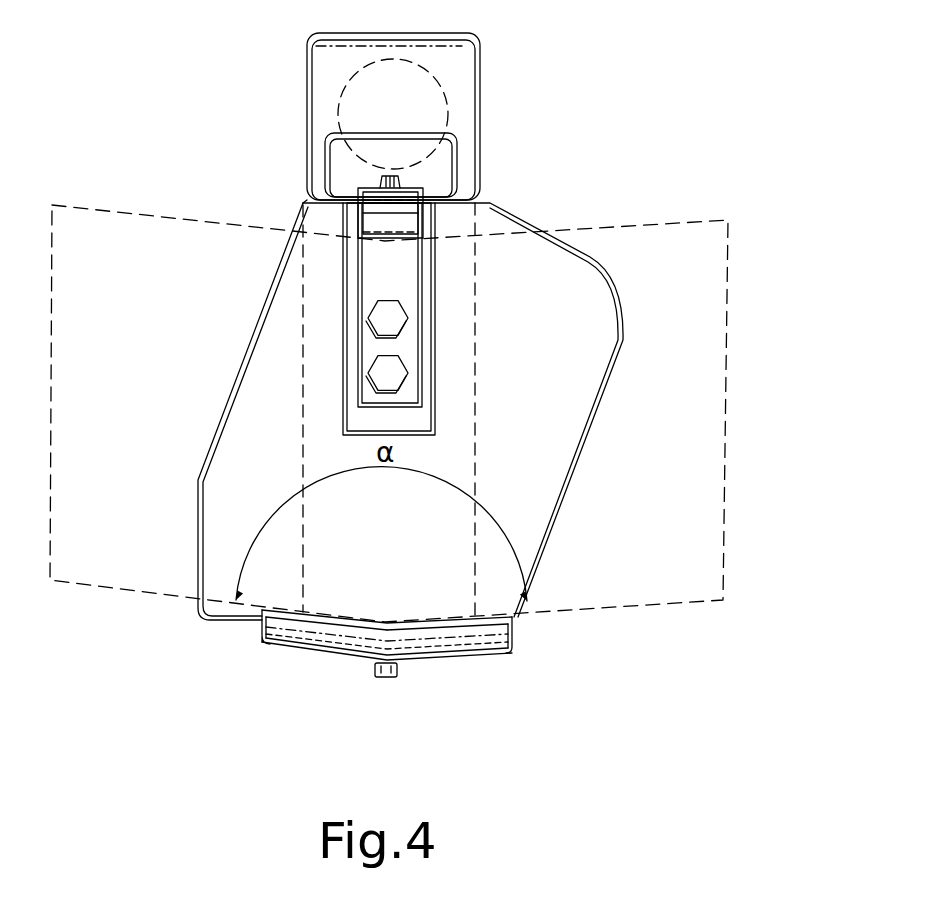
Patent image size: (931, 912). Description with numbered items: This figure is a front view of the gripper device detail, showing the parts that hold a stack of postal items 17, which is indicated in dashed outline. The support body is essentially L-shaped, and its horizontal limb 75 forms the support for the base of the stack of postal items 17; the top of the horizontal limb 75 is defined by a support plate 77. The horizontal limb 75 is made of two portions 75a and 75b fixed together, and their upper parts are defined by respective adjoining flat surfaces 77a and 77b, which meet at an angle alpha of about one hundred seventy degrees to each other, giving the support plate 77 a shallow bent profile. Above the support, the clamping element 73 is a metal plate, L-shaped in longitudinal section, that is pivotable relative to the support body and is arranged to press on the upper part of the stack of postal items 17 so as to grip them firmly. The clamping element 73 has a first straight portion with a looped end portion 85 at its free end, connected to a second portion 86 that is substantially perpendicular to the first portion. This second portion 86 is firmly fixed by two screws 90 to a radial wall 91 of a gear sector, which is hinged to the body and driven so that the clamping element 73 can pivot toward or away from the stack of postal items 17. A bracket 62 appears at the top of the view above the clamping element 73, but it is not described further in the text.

The stack of postal items 17 is at (732, 258).
The upper mounting bracket 62 is at (445, 87).
The clamping element 73 is at (414, 182).
The looped end portion 85 is at (410, 222).
The second portion 86 is at (370, 346).
The screws 90 is at (395, 318).
The radial wall 91 is at (410, 414).
The horizontal limb 75 is at (398, 612).
The first portion of the horizontal limb 75a is at (275, 638).
The second portion of the horizontal limb 75b is at (498, 640).
The support plate 77 is at (400, 612).
The flat surface 77a is at (355, 612).
The flat surface 77b is at (485, 612).